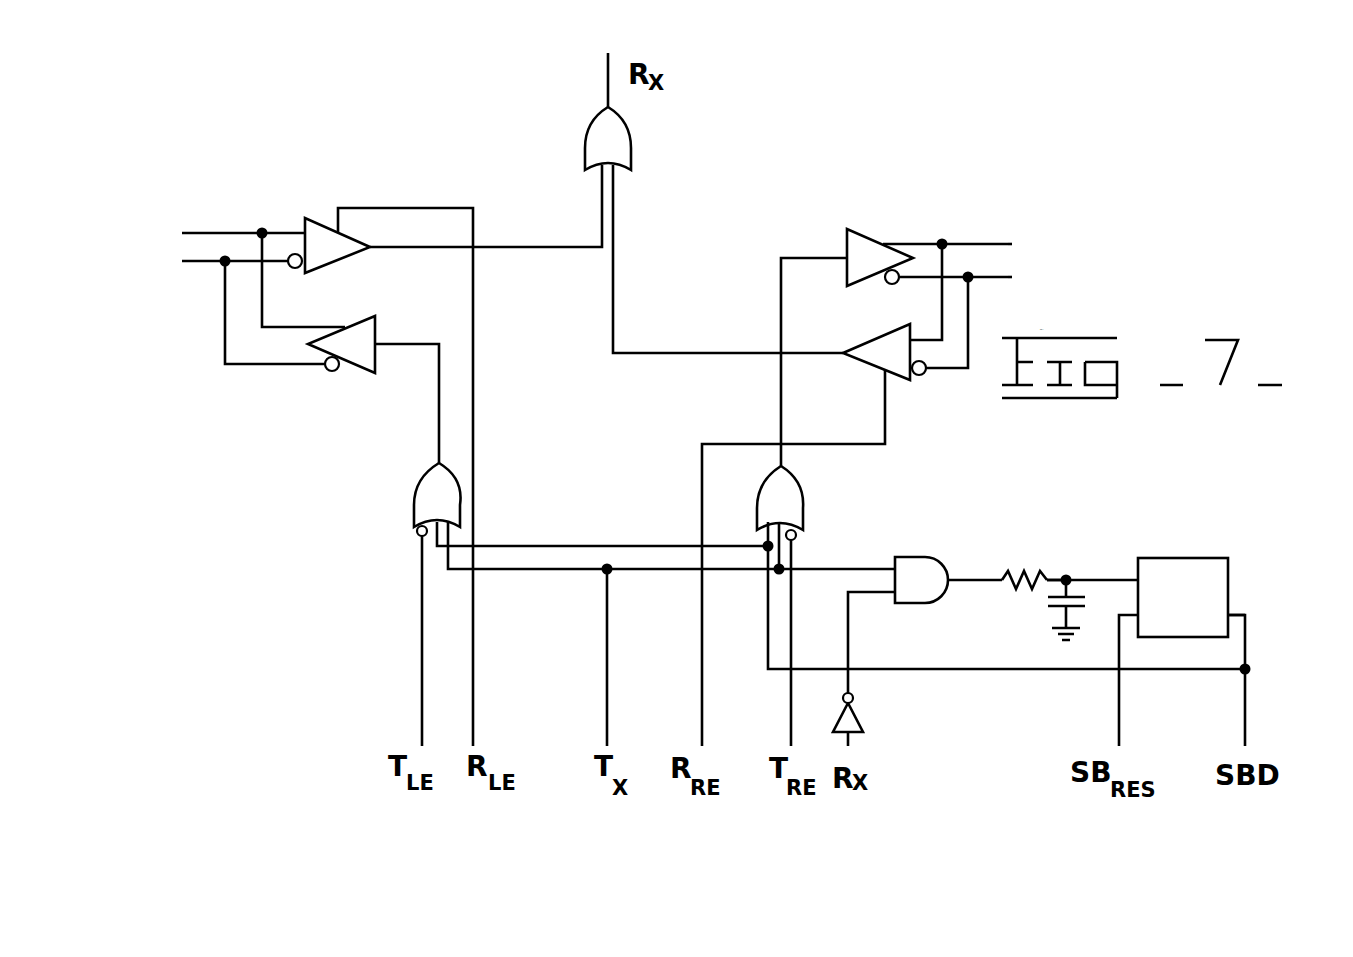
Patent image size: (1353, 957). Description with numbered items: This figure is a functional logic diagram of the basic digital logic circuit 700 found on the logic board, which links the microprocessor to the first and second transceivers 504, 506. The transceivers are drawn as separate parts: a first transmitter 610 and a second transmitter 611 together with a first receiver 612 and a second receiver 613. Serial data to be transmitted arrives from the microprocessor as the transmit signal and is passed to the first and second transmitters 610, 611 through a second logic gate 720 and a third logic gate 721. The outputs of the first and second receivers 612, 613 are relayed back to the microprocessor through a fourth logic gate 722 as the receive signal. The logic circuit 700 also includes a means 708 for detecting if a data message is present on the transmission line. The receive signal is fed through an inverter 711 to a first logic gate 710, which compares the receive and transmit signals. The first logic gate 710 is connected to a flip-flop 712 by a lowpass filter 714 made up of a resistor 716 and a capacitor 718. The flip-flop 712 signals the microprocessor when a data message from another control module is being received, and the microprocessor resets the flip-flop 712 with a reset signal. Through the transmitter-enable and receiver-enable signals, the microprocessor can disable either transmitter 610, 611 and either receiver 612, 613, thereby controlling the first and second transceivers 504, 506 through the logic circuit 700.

The first transceiver 504 is at (295, 180).
The second transceiver 506 is at (1010, 203).
The digital logic circuit 700 is at (762, 140).
The first transmitter 610 is at (365, 370).
The second transmitter 611 is at (858, 233).
The first receiver 612 is at (345, 255).
The second receiver 613 is at (878, 335).
The second logic gate 720 is at (420, 492).
The third logic gate 721 is at (798, 493).
The fourth logic gate 722 is at (588, 138).
The first logic gate 710 is at (905, 556).
The inverter 711 is at (856, 713).
The flip-flop 712 is at (1188, 556).
The lowpass filter 714 is at (1070, 563).
The resistor 716 is at (1007, 572).
The capacitor 718 is at (1048, 602).
The means for detecting if a data message is present 708 is at (1232, 528).